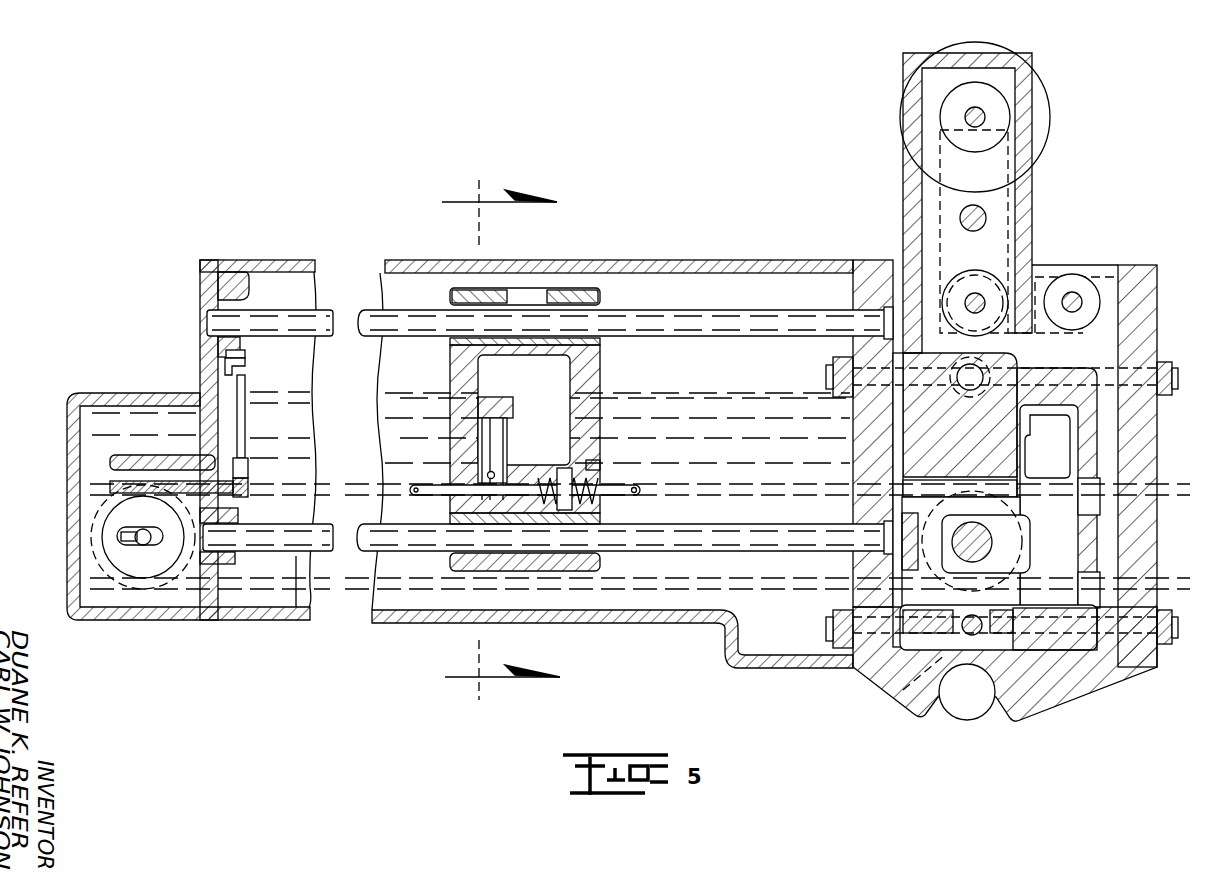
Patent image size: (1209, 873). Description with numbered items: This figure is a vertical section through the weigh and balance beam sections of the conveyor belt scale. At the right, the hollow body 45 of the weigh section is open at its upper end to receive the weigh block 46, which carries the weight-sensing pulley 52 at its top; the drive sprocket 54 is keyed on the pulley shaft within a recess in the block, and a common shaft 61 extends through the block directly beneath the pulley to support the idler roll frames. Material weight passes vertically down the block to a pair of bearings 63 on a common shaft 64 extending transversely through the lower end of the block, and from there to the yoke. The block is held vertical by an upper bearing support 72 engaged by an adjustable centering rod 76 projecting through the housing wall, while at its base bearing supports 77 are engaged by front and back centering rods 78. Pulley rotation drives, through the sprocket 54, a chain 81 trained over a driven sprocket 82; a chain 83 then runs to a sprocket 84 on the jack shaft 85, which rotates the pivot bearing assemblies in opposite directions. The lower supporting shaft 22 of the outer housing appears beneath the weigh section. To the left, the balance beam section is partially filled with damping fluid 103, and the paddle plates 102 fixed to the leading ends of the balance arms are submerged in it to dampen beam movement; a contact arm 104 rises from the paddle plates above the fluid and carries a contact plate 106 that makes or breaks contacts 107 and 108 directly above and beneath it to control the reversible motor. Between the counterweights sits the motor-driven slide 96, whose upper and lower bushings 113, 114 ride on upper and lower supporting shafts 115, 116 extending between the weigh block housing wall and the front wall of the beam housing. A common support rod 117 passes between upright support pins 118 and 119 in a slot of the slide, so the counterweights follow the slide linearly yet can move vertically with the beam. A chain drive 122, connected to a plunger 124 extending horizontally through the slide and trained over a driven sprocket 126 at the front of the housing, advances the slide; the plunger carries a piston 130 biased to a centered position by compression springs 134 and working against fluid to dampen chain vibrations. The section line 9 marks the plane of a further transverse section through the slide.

The section line 9- 9 is at (501, 442).
The lower supporting shaft 22 is at (970, 713).
The hollow body 45 is at (1130, 265).
The weigh block 46 is at (913, 52).
The weight-sensing pulley 52 is at (976, 44).
The drive sprocket 54 is at (941, 110).
The common shaft 61 is at (986, 217).
The bearings 63 is at (1020, 528).
The common shaft 64 is at (990, 547).
The upper bearing support 72 is at (970, 360).
The adjustable centering rod 76 is at (835, 373).
The bearing supports 77 is at (898, 690).
The centering rods 78 is at (832, 624).
The chain 81 is at (940, 200).
The driven sprocket 82 is at (962, 282).
The chain 83 is at (1038, 272).
The sprocket 84 is at (1070, 276).
The jack shaft 85 is at (1072, 312).
The motor-driven slide 96 is at (604, 370).
The paddle plates 102 is at (110, 487).
The damping fluid 103 is at (695, 395).
The contact arm 104 is at (245, 416).
The contact plate 106 is at (226, 356).
The contact 107 is at (238, 345).
The contact 108 is at (242, 370).
The upper bushing 113 is at (450, 305).
The lower bushing 114 is at (450, 520).
The upper supporting shaft 115 is at (775, 311).
The lower supporting shaft 116 is at (758, 528).
The common support rod 117 is at (491, 472).
The upright support pin 118 is at (480, 434).
The upright support pin 119 is at (505, 436).
The chain drive 122 is at (770, 486).
The plunger 124 is at (630, 485).
The driven sprocket 126 is at (113, 570).
The piston 130 is at (590, 468).
The compression springs 134 is at (600, 513).